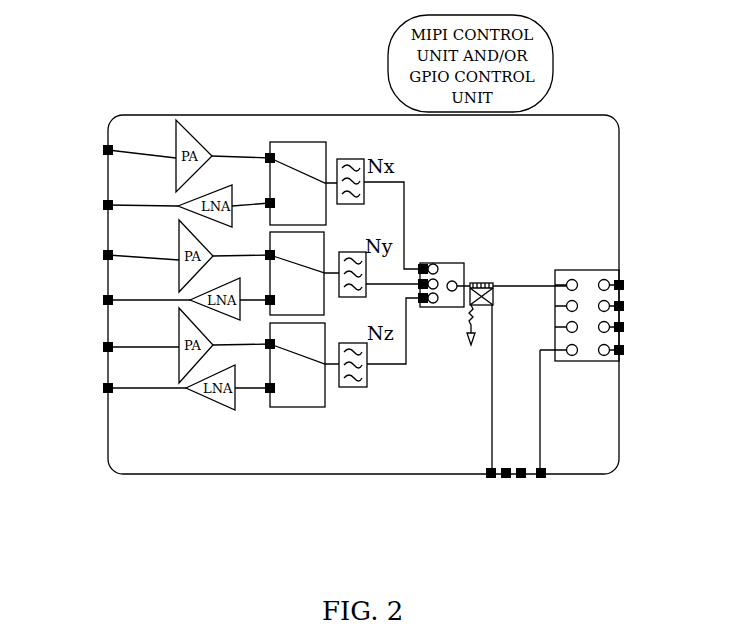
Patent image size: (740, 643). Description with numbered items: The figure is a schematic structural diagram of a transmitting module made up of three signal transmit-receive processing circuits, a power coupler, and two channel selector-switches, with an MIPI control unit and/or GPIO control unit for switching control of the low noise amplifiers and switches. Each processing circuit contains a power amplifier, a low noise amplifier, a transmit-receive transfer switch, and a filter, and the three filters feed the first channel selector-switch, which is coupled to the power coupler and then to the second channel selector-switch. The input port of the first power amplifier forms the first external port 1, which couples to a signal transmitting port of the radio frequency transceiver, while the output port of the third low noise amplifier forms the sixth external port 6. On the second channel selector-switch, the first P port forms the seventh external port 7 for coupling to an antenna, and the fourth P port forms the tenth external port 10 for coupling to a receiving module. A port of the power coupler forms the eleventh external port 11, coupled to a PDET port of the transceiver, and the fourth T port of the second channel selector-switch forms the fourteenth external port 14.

The first external port 1 is at (80, 150).
The sixth external port 6 is at (81, 387).
The seventh external port 7 is at (642, 260).
The tenth external port 10 is at (641, 375).
The eleventh external port 11 is at (466, 495).
The fourteenth external port 14 is at (564, 495).